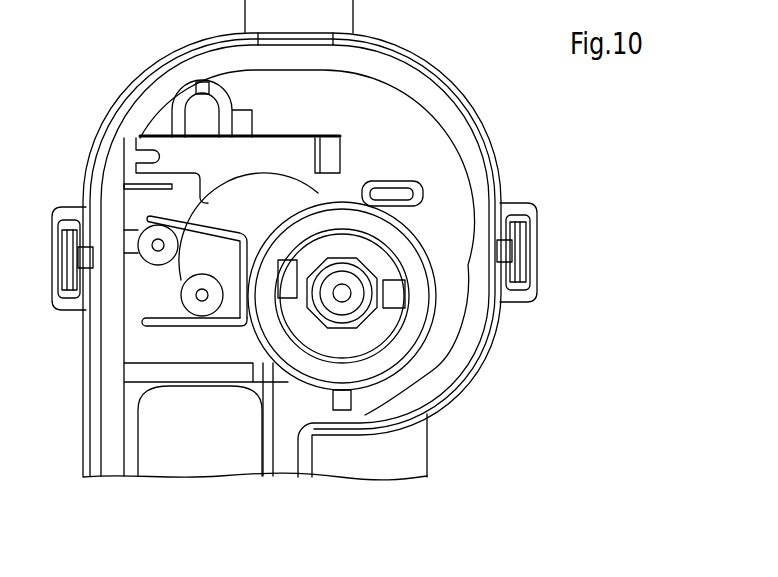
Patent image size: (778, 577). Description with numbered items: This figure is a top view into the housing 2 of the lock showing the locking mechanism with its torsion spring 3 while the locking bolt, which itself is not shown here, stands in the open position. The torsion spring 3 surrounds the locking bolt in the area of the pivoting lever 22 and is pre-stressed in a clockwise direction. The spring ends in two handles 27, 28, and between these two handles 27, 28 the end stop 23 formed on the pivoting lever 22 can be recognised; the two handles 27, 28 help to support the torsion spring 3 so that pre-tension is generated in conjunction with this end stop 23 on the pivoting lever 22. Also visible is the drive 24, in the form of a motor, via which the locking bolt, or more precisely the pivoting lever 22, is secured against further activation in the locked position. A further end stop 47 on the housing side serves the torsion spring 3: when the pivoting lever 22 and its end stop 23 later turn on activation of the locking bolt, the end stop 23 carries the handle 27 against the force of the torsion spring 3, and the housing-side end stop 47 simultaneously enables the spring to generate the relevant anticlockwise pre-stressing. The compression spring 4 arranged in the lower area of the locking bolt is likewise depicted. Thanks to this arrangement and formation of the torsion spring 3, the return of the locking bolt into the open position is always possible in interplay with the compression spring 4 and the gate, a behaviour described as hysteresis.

The housing 2 is at (500, 335).
The torsion spring 3 is at (418, 236).
The compression spring 4 is at (365, 318).
The pivoting lever 22 is at (279, 188).
The end stop 23 is at (197, 306).
The drive 24 is at (247, 443).
The handle 27 is at (158, 220).
The handle 28 is at (165, 323).
The end stop 47 is at (157, 257).